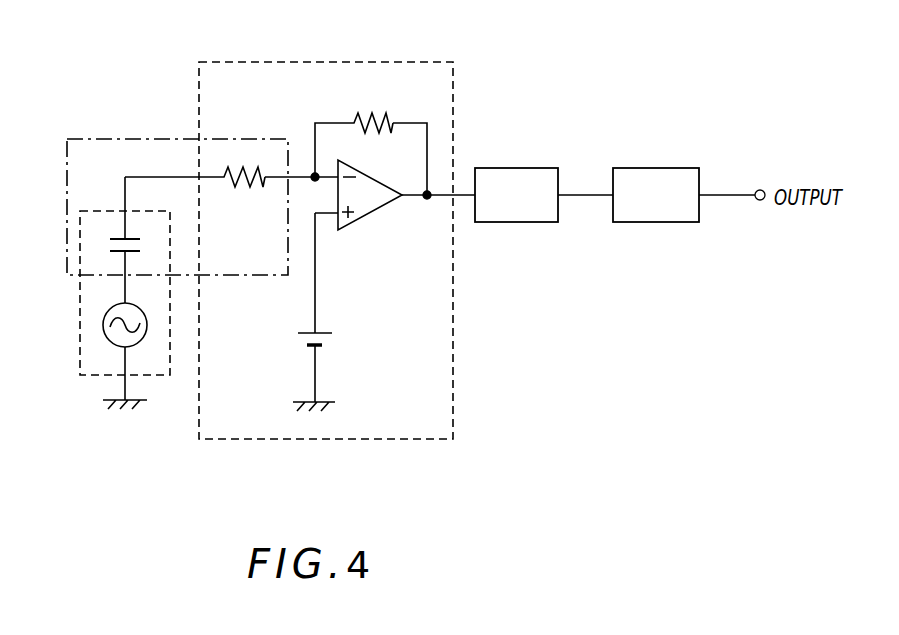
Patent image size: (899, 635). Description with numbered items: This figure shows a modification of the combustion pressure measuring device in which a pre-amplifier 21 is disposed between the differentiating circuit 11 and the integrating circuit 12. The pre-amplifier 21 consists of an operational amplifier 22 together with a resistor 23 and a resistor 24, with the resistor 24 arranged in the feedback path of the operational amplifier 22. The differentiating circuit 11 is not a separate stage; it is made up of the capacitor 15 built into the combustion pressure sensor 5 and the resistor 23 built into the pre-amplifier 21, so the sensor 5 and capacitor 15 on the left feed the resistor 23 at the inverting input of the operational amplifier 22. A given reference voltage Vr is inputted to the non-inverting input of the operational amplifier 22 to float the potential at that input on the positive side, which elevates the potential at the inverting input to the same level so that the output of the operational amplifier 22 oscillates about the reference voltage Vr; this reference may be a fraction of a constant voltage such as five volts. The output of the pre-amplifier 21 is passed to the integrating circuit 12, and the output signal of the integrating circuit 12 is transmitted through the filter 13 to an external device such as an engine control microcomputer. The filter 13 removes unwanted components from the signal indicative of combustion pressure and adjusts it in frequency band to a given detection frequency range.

The combustion pressure sensor 5 is at (80, 322).
The differentiating circuit 11 is at (135, 138).
The integrating circuit 12 is at (515, 167).
The filter 13 is at (655, 167).
The capacitor 15 is at (118, 239).
The pre-amplifier 21 is at (373, 62).
The operational amplifier 22 is at (371, 213).
The resistor 23 is at (256, 167).
The resistor 24 is at (386, 123).